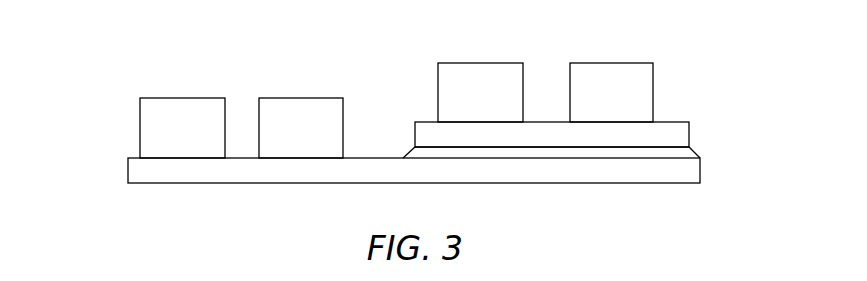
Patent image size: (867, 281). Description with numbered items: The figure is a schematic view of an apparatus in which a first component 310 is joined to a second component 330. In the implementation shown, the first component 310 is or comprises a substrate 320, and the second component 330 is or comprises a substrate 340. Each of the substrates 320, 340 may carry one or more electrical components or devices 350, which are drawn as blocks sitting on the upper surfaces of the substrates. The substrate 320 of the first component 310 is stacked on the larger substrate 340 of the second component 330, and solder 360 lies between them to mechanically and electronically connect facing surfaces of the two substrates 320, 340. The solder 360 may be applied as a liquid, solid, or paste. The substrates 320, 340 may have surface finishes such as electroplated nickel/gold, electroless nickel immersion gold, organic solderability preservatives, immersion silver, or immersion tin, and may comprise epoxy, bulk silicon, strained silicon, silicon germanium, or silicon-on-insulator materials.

The first component 310 is at (405, 113).
The substrate 320 is at (690, 133).
The second component 330 is at (110, 150).
The substrate 340 is at (700, 170).
The electrical components or devices 350 is at (629, 105).
The solder 360 is at (690, 153).